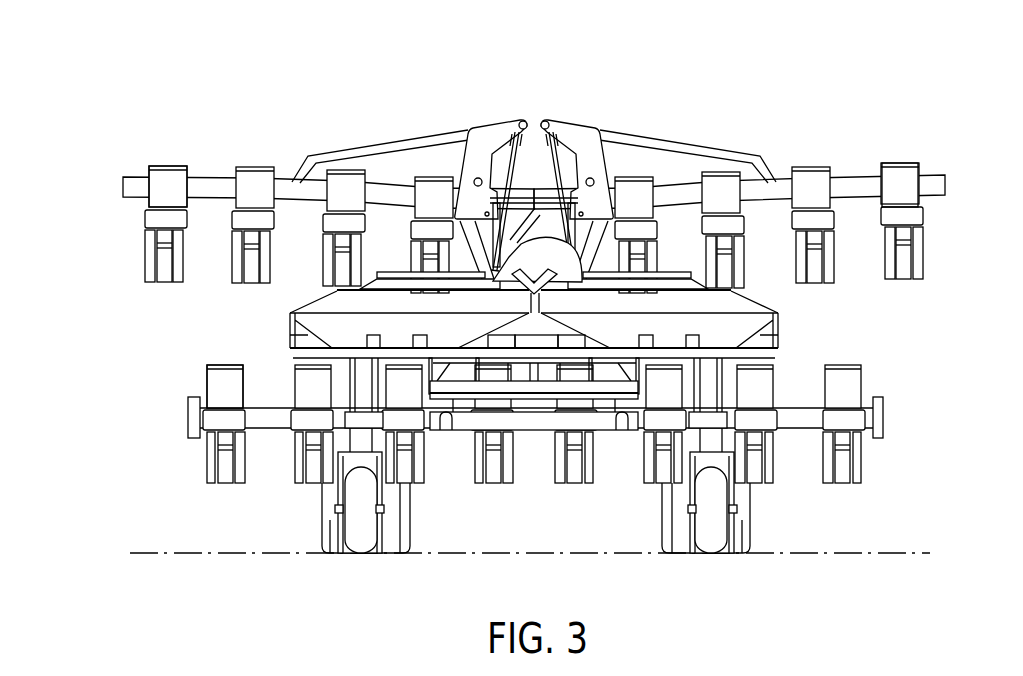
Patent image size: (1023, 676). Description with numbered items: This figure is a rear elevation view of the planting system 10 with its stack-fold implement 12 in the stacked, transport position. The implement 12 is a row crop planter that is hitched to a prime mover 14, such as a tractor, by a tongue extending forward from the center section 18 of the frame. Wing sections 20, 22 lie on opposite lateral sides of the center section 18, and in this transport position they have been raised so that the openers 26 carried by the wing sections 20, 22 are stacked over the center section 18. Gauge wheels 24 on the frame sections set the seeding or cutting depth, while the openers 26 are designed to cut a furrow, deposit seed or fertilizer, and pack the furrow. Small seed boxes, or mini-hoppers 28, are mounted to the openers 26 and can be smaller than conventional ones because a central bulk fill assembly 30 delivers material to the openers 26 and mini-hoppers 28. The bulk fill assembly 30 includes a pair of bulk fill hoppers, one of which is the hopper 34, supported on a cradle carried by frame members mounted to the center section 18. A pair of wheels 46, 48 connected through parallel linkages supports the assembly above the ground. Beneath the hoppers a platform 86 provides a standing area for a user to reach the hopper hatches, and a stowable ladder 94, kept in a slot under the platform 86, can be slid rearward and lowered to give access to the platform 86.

The planting system 10 is at (539, 335).
The stack-fold implement 12 is at (567, 172).
The prime mover 14 is at (535, 186).
The center section 18 is at (878, 418).
The wing section 20 is at (848, 190).
The wing section 22 is at (207, 190).
The gauge wheels 24 is at (920, 272).
The openers 26 is at (163, 273).
The mini-hoppers 28 is at (168, 178).
The central bulk fill assembly 30 is at (670, 249).
The bulk fill hopper 34 is at (302, 322).
The wheel 46 is at (362, 535).
The wheel 48 is at (715, 530).
The platform 86 is at (302, 355).
The stowable ladder 94 is at (473, 365).